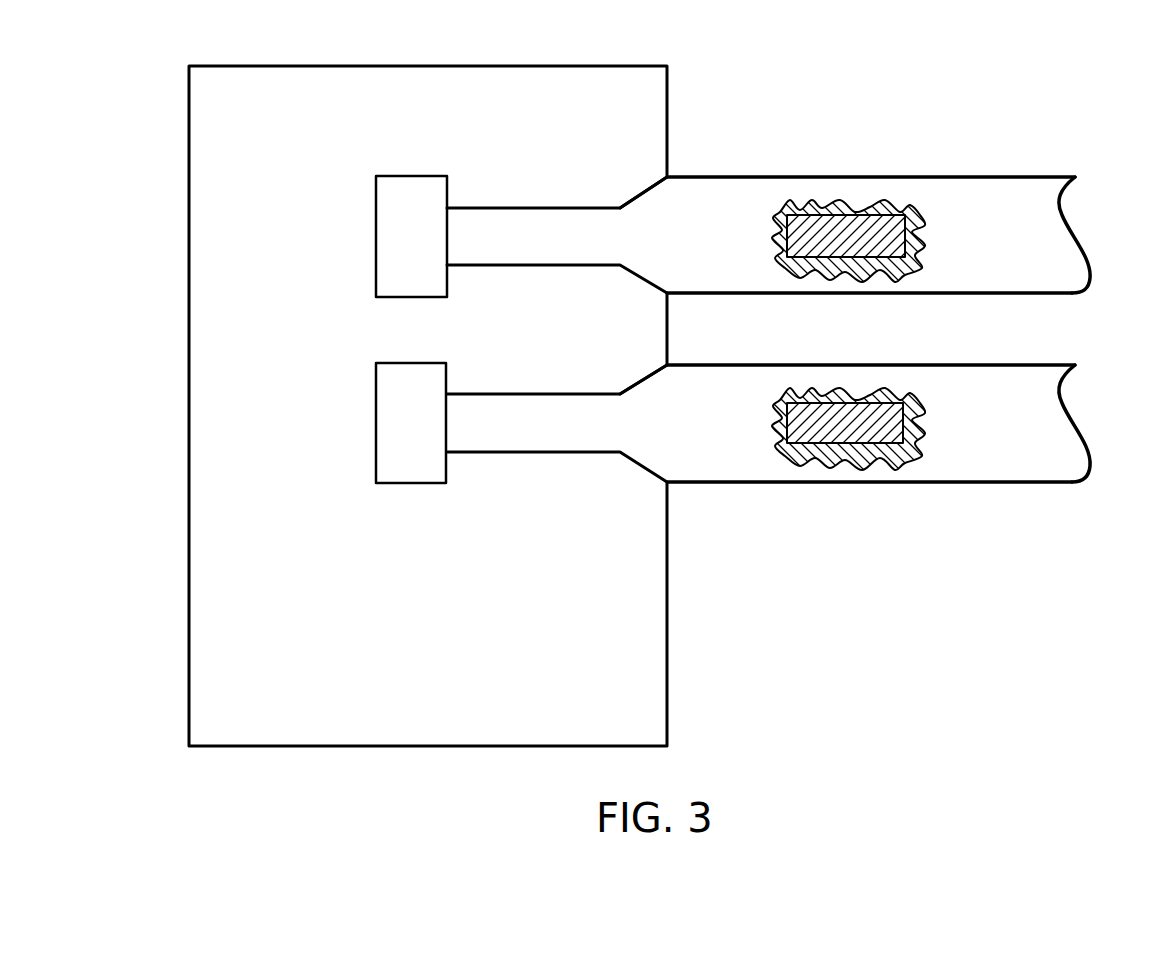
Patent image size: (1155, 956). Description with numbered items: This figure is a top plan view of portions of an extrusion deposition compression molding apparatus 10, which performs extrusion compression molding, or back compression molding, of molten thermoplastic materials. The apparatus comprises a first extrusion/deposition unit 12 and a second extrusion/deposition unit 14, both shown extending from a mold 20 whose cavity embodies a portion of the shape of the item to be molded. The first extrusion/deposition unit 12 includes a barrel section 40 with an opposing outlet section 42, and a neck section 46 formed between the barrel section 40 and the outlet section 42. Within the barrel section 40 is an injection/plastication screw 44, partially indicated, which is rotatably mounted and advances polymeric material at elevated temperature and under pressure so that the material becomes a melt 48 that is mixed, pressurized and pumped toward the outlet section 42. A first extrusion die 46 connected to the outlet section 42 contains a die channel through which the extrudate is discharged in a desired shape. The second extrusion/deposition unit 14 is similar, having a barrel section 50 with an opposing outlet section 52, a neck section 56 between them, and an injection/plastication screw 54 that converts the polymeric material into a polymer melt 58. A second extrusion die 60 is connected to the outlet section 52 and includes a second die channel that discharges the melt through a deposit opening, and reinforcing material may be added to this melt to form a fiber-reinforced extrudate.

The extrusion deposition compression molding apparatus 10 is at (1058, 130).
The first extrusion/deposition unit 12 is at (1045, 213).
The second extrusion/deposition unit 14 is at (1054, 465).
The mold 20 is at (652, 690).
The barrel section 40 is at (955, 190).
The outlet section 42 is at (482, 218).
The injection/plastication screw 44 is at (835, 220).
The neck section 46 is at (643, 190).
The melt 48 is at (800, 205).
The barrel section 50 is at (955, 470).
The outlet section 52 is at (518, 433).
The injection/plastication screw 54 is at (833, 435).
The neck section 56 is at (652, 397).
The polymer melt 58 is at (800, 395).
The second extrusion die 60 is at (412, 470).